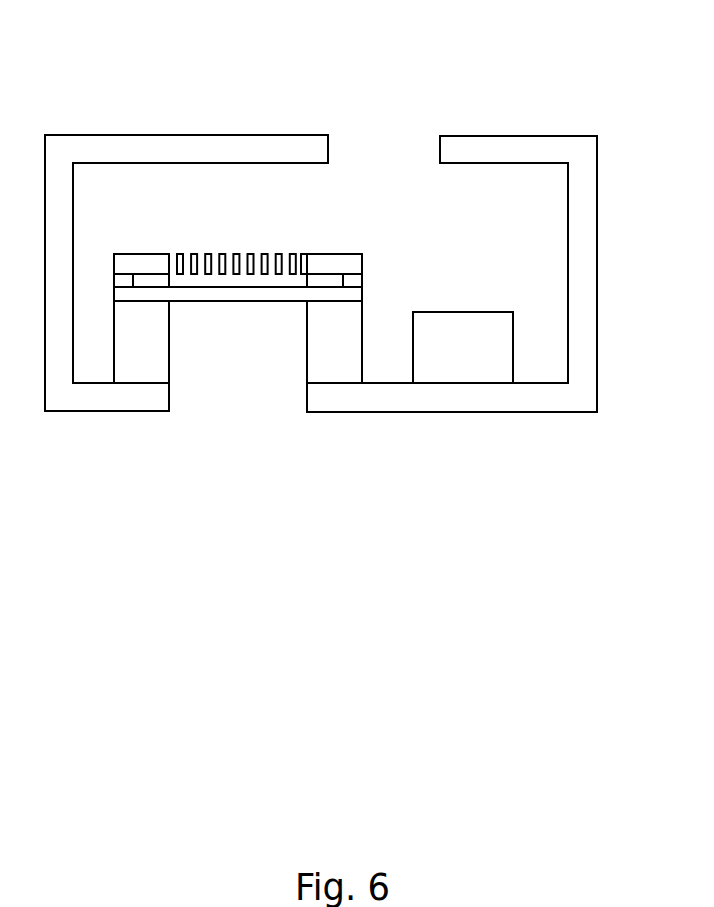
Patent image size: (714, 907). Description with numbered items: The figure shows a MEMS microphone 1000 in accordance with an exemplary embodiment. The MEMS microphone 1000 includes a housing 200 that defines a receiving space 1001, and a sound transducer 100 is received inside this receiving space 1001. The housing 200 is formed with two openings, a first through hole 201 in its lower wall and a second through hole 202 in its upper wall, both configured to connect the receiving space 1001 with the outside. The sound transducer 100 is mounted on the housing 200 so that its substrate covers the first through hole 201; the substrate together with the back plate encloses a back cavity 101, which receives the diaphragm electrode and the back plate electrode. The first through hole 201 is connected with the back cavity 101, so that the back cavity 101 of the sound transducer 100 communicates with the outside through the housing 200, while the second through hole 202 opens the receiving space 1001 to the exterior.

The MEMS microphone 1000 is at (337, 49).
The housing 200 is at (180, 153).
The second through hole 202 is at (388, 147).
The first through hole 201 is at (225, 400).
The sound transducer 100 is at (233, 297).
The back cavity 101 is at (250, 338).
The receiving space 1001 is at (442, 270).